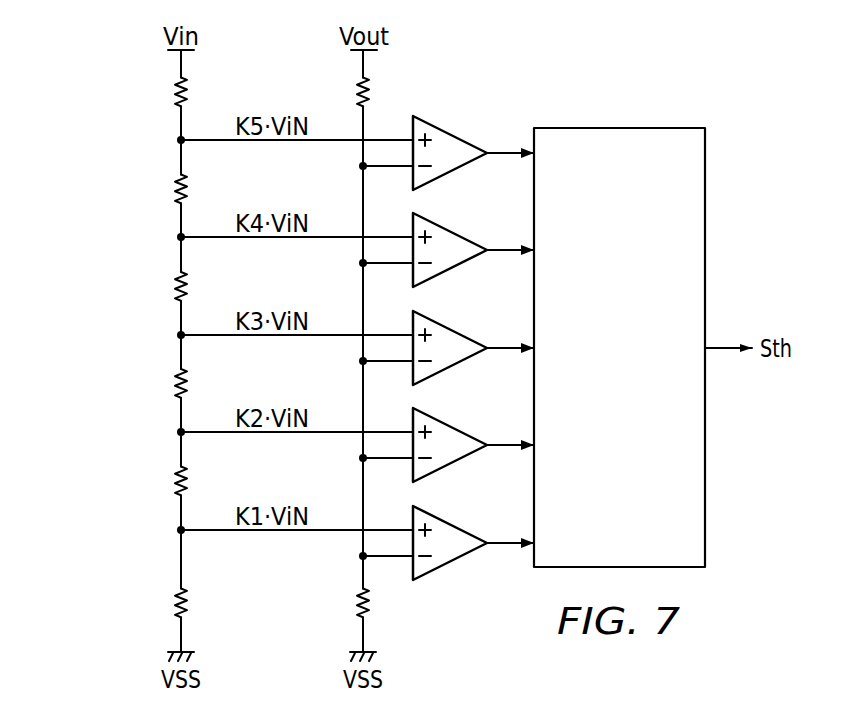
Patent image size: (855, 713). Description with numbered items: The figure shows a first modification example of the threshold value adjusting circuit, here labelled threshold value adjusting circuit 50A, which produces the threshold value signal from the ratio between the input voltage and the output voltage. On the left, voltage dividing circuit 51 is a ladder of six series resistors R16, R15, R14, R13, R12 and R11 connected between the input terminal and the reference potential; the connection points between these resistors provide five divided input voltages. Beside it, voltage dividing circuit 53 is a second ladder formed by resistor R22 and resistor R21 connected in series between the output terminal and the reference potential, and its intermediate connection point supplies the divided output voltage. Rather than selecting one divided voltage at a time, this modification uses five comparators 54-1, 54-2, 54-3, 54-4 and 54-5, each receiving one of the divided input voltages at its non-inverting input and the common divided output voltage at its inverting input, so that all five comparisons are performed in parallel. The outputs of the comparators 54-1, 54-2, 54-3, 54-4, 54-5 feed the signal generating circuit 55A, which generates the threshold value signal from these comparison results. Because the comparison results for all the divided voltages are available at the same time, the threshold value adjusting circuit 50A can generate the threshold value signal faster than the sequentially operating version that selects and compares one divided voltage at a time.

The threshold value adjusting circuit 50A is at (620, 69).
The voltage dividing circuit 51 is at (222, 617).
The voltage dividing circuit 53 is at (393, 617).
The comparator 54-1 is at (455, 526).
The comparator 54-2 is at (455, 428).
The comparator 54-3 is at (455, 331).
The comparator 54-4 is at (455, 233).
The comparator 54-5 is at (455, 136).
The signal generating circuit 55A is at (597, 416).
The resistor R11 is at (158, 604).
The resistor R12 is at (158, 482).
The resistor R13 is at (158, 384).
The resistor R14 is at (158, 287).
The resistor R15 is at (158, 190).
The resistor R16 is at (158, 93).
The resistor R21 is at (340, 604).
The resistor R22 is at (340, 93).